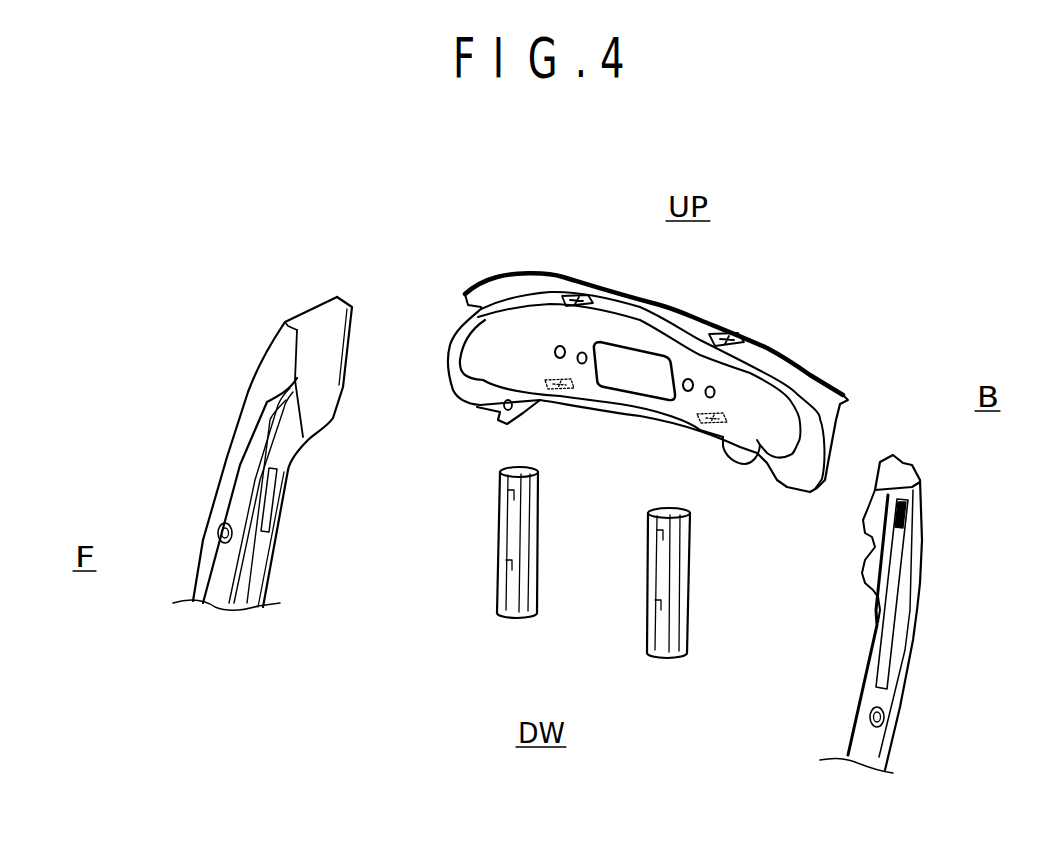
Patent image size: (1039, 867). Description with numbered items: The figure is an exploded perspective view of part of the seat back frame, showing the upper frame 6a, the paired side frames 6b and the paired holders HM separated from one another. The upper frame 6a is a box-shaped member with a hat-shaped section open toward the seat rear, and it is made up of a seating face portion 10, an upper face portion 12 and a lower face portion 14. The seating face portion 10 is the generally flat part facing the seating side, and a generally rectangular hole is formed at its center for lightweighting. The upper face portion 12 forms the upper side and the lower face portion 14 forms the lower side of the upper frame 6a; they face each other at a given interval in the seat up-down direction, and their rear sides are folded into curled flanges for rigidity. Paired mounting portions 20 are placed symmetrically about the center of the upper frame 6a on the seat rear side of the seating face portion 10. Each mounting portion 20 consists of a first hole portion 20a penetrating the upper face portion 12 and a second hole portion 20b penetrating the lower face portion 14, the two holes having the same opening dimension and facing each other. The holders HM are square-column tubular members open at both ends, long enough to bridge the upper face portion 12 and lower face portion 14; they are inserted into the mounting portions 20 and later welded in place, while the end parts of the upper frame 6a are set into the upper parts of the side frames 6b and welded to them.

The upper frame 6a is at (896, 308).
The side frames 6b is at (295, 543).
The seating face portion 10 is at (740, 392).
The upper face portion 12 is at (788, 372).
The lower face portion 14 is at (828, 400).
The mounting portions 20 is at (458, 200).
The first hole portion 20a is at (553, 297).
The second hole portion 20b is at (547, 378).
The holders HM is at (500, 541).